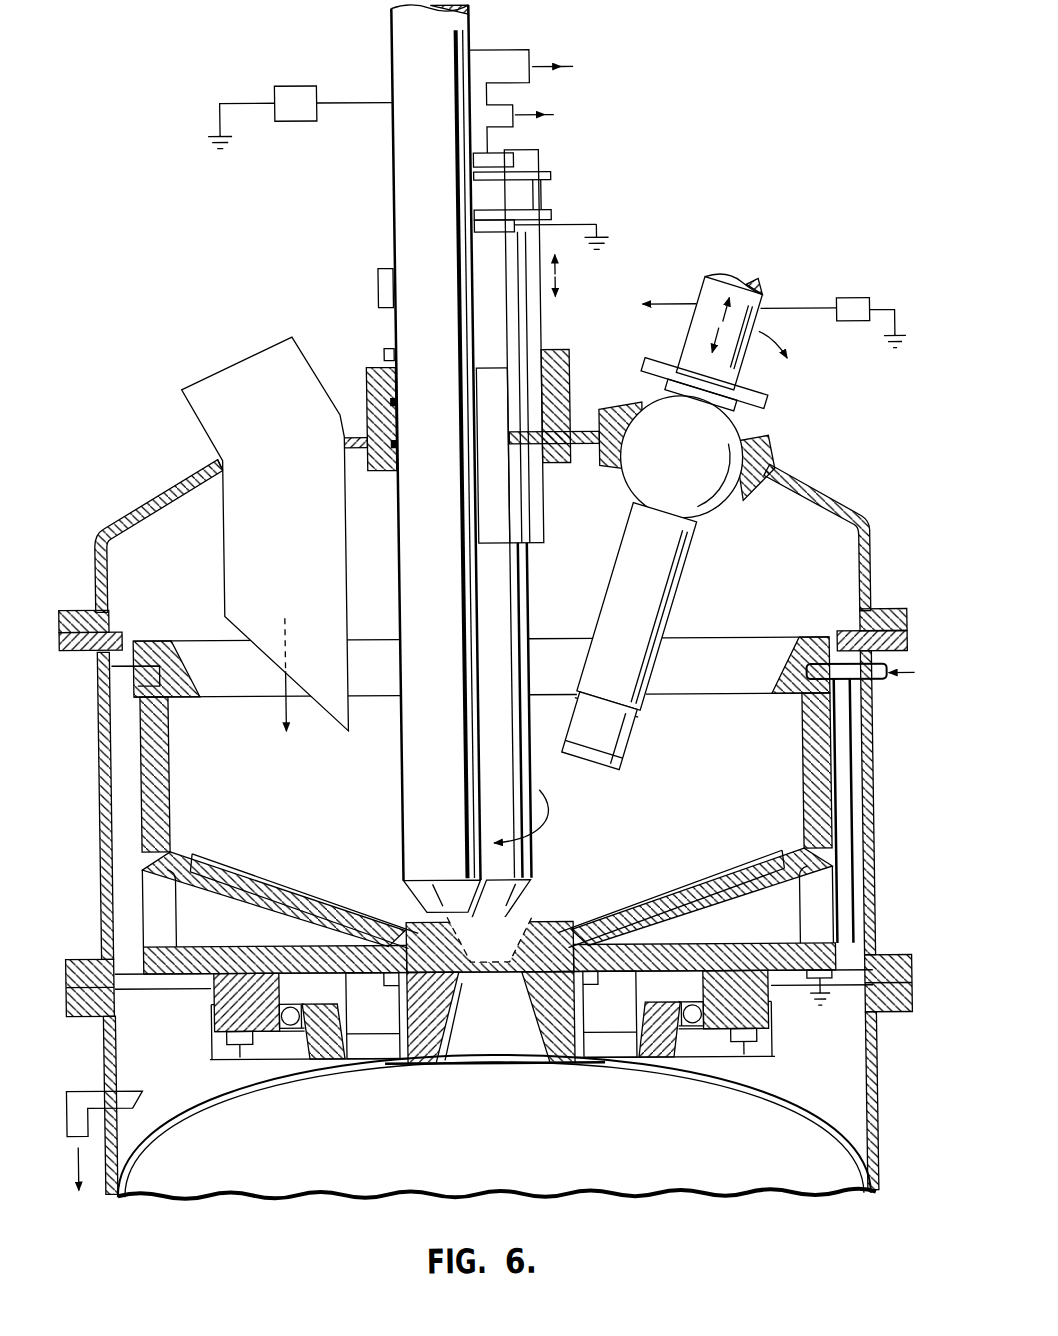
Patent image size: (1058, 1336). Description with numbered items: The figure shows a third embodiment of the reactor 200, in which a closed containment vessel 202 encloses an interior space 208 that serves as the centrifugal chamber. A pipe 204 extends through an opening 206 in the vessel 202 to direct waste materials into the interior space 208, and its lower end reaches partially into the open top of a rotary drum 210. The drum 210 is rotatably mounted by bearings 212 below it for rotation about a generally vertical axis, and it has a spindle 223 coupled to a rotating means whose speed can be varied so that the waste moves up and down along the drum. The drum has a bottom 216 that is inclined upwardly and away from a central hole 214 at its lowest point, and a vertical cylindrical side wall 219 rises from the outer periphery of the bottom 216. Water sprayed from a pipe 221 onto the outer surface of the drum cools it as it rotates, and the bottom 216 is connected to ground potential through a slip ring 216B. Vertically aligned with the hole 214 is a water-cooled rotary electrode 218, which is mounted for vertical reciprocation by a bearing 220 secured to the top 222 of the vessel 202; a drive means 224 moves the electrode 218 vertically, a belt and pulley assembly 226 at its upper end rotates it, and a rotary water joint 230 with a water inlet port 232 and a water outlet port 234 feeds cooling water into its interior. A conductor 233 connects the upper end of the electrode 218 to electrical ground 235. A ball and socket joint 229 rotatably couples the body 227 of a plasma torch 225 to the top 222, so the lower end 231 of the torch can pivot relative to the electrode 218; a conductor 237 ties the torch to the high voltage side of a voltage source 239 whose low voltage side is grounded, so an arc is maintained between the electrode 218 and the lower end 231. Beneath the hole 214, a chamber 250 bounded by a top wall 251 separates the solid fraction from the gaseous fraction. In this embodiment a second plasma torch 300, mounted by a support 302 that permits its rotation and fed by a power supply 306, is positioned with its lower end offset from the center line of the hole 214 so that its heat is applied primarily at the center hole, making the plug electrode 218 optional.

The reactor 200 is at (727, 238).
The closed containment vessel 202 is at (874, 584).
The pipe 204 is at (212, 428).
The opening 206 is at (230, 465).
The interior space 208 is at (392, 756).
The rotary drum 210 is at (170, 785).
The bearings 212 is at (283, 1035).
The central hole 214 is at (505, 978).
The bottom 216 is at (603, 908).
The slip ring 216B is at (835, 968).
The water-cooled rotary electrode 218 is at (403, 783).
The cylindrical side wall 219 is at (170, 823).
The bearing 220 is at (572, 387).
The pipe 221 is at (855, 735).
The top 222 is at (354, 437).
The spindle 223 is at (455, 1040).
The drive means 224 is at (384, 287).
The plasma torch 225 is at (635, 718).
The belt and pulley assembly 226 is at (541, 196).
The body 227 is at (650, 660).
The ball and socket joint 229 is at (703, 514).
The rotary water joint 230 is at (482, 50).
The lower end 231 is at (605, 772).
The water inlet port 232 is at (538, 52).
The conductor 233 is at (603, 225).
The water outlet port 234 is at (506, 124).
The electrical ground 235 is at (615, 238).
The conductor 237 is at (821, 310).
The voltage source 239 is at (862, 302).
The chamber 250 is at (615, 1141).
The top wall 251 is at (805, 1098).
The second plasma torch 300 is at (403, 572).
The support 302 is at (376, 366).
The power supply 306 is at (305, 88).